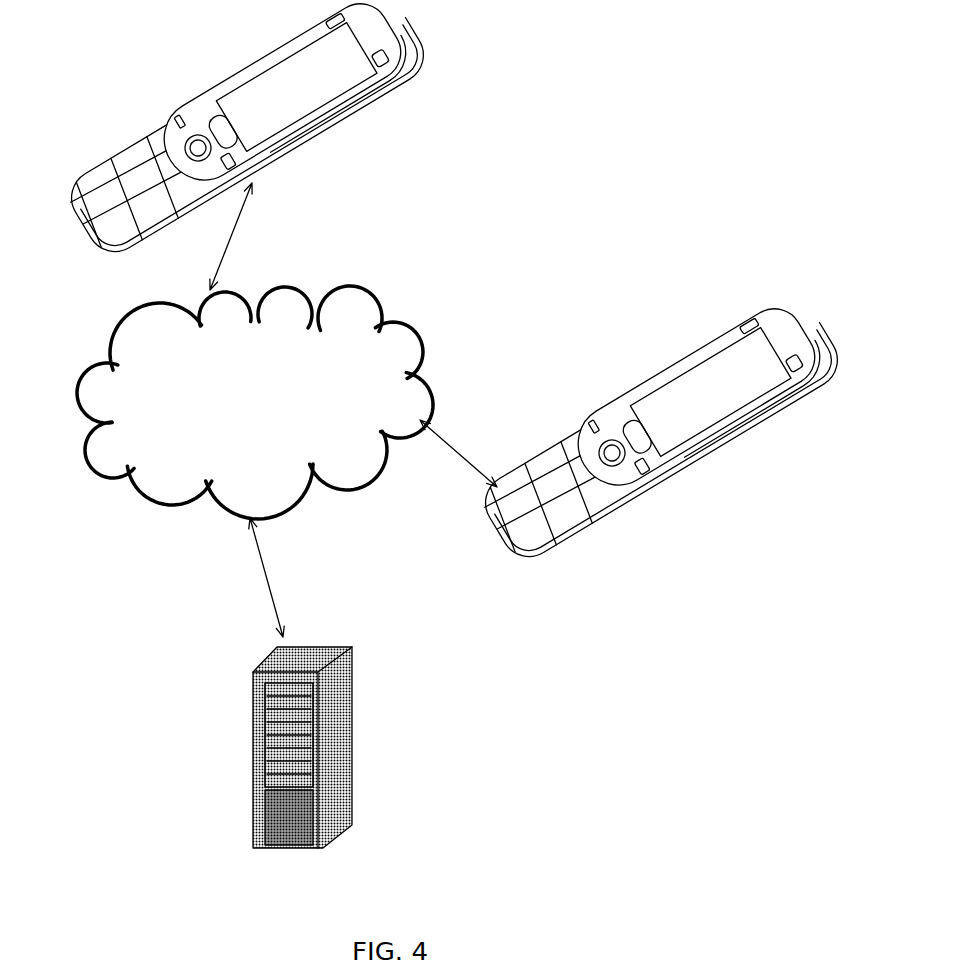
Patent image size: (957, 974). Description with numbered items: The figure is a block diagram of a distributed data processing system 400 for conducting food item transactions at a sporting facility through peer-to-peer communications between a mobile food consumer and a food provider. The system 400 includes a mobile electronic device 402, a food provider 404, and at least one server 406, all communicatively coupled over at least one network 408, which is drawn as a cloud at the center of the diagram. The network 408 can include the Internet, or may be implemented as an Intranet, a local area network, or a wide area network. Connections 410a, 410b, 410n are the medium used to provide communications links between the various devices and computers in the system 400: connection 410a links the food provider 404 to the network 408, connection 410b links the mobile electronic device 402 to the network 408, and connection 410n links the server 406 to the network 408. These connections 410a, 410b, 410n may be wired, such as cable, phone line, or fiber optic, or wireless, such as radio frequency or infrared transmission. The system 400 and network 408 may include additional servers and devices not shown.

The system 400 is at (452, 462).
The mobile electronic device 402 is at (705, 331).
The food provider 404 is at (307, 123).
The server 406 is at (352, 795).
The network 408 is at (255, 402).
The connection 410a is at (220, 267).
The connection 410b is at (463, 455).
The connection 410n is at (273, 592).